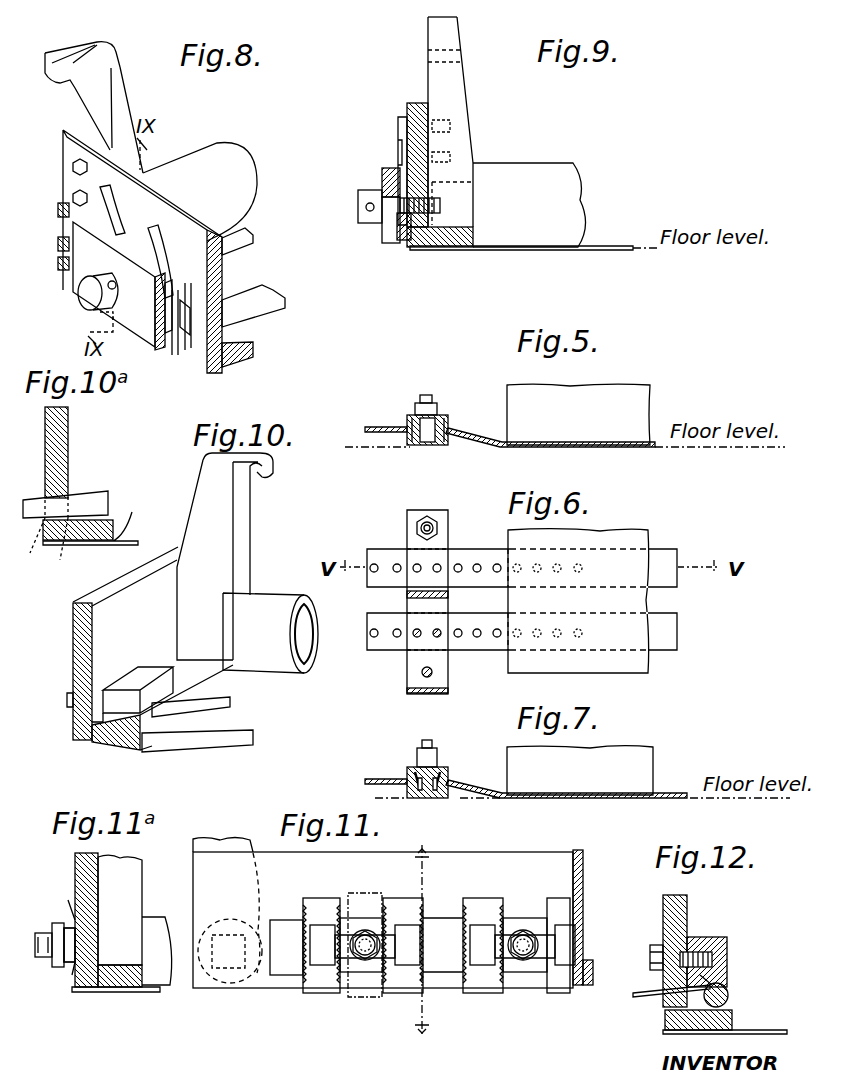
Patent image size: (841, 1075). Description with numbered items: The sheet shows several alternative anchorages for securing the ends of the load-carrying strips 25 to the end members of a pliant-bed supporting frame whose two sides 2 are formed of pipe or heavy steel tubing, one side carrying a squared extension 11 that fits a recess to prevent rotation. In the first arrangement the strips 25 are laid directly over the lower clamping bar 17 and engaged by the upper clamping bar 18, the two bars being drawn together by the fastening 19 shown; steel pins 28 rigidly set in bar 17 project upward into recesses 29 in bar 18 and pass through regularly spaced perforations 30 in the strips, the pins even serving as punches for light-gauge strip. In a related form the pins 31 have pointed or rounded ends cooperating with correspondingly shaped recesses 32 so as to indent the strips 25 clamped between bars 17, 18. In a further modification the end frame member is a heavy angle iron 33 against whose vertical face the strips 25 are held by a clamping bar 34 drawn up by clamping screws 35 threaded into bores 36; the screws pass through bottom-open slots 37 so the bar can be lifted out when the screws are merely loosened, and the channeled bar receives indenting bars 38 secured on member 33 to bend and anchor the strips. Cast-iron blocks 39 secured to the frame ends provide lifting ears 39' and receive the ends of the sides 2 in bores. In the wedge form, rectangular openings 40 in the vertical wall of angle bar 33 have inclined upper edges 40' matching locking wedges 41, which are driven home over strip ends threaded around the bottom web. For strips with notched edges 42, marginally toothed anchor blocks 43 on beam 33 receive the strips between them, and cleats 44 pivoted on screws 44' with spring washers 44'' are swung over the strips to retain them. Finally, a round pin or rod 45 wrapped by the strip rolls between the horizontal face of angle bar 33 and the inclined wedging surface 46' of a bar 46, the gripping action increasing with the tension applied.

In FIG. 8, the side of the frame 2 is at (200, 192).
In FIG. 9, the side of the frame 2 is at (529, 205).
In FIG. 10, the side of the frame 2 is at (270, 633).
In FIG. 11A, the side of the frame 2 is at (157, 951).
In FIG. 9, the squared extension 11 is at (462, 165).
In FIG. 5, the clamping bar 17 is at (450, 440).
In FIG. 6, the clamping bar 17 is at (448, 600).
In FIG. 7, the clamping bar 17 is at (412, 800).
In FIG. 5, the clamping bar 18 is at (407, 418).
In FIG. 6, the clamping bar 18 is at (445, 545).
In FIG. 7, the clamping bar 18 is at (444, 769).
In FIG. 6, the bolt 19 is at (437, 520).
In FIG. 8, the strips 25 is at (114, 215).
In FIG. 9, the strips 25 is at (609, 241).
In FIG. 5, the strips 25 is at (627, 433).
In FIG. 6, the strips 25 is at (655, 620).
In FIG. 7, the strips 25 is at (665, 793).
In FIG. 10A, the strips 25 is at (122, 540).
In FIG. 10, the strips 25 is at (225, 733).
In FIG. 11A, the strips 25 is at (135, 995).
In FIG. 11, the strips 25 is at (555, 985).
In FIG. 12, the strips 25 is at (752, 1032).
In FIG. 5, the steel pins 28 is at (432, 442).
In FIG. 6, the steel pins 28 is at (437, 640).
In FIG. 5, the recesses 29 is at (437, 413).
In FIG. 6, the recesses 29 is at (417, 566).
In FIG. 6, the perforations 30 is at (397, 572).
In FIG. 7, the pins 31 is at (445, 800).
In FIG. 7, the recesses 32 is at (415, 780).
In FIG. 8, the end frame member 33 is at (218, 296).
In FIG. 9, the end frame member 33 is at (418, 103).
In FIG. 10A, the end frame member 33 is at (66, 455).
In FIG. 10, the end frame member 33 is at (127, 593).
In FIG. 11A, the end frame member 33 is at (78, 870).
In FIG. 11, the end frame member 33 is at (580, 890).
In FIG. 12, the end frame member 33 is at (680, 912).
In FIG. 8, the clamping bar 34 is at (130, 322).
In FIG. 9, the clamping bar 34 is at (385, 172).
In FIG. 8, the clamping screws 35 is at (83, 293).
In FIG. 9, the clamping screws 35 is at (362, 192).
In FIG. 9, the bores 36 is at (420, 245).
In FIG. 8, the slots 37 is at (113, 315).
In FIG. 9, the slots 37 is at (383, 232).
In FIG. 8, the indenting bars 38 is at (190, 347).
In FIG. 9, the indenting bars 38 is at (400, 238).
In FIG. 8, the blocks 39 is at (103, 113).
In FIG. 9, the blocks 39 is at (466, 122).
In FIG. 10, the blocks 39 is at (229, 560).
In FIG. 11A, the blocks 39 is at (135, 910).
In FIG. 11, the blocks 39 is at (227, 897).
In FIG. 8, the lifting ears 39' is at (87, 47).
In FIG. 9, the lifting ears 39' is at (462, 39).
In FIG. 10, the lifting ears 39' is at (249, 478).
In FIG. 10A, the rectangular openings 40 is at (46, 543).
In FIG. 10, the rectangular openings 40 is at (138, 670).
In FIG. 12, the rectangular openings 40 is at (664, 976).
In FIG. 10A, the upper edge 40' is at (76, 484).
In FIG. 10A, the locking wedges 41 is at (105, 495).
In FIG. 10, the locking wedges 41 is at (133, 685).
In FIG. 11, the notched edges 42 is at (465, 900).
In FIG. 11, the anchor blocks 43 is at (330, 975).
In FIG. 11A, the cleats 44 is at (55, 937).
In FIG. 11, the cleats 44 is at (442, 989).
In FIG. 11A, the pivot screws 44' is at (36, 969).
In FIG. 11, the pivot screws 44' is at (432, 980).
In FIG. 11A, the spring washer 44'' is at (73, 977).
In FIG. 11, the spring washer 44'' is at (457, 911).
In FIG. 12, the round pin or rod 45 is at (728, 990).
In FIG. 12, the bar 46 is at (700, 948).
In FIG. 12, the inclined wedging surface 46' is at (733, 957).